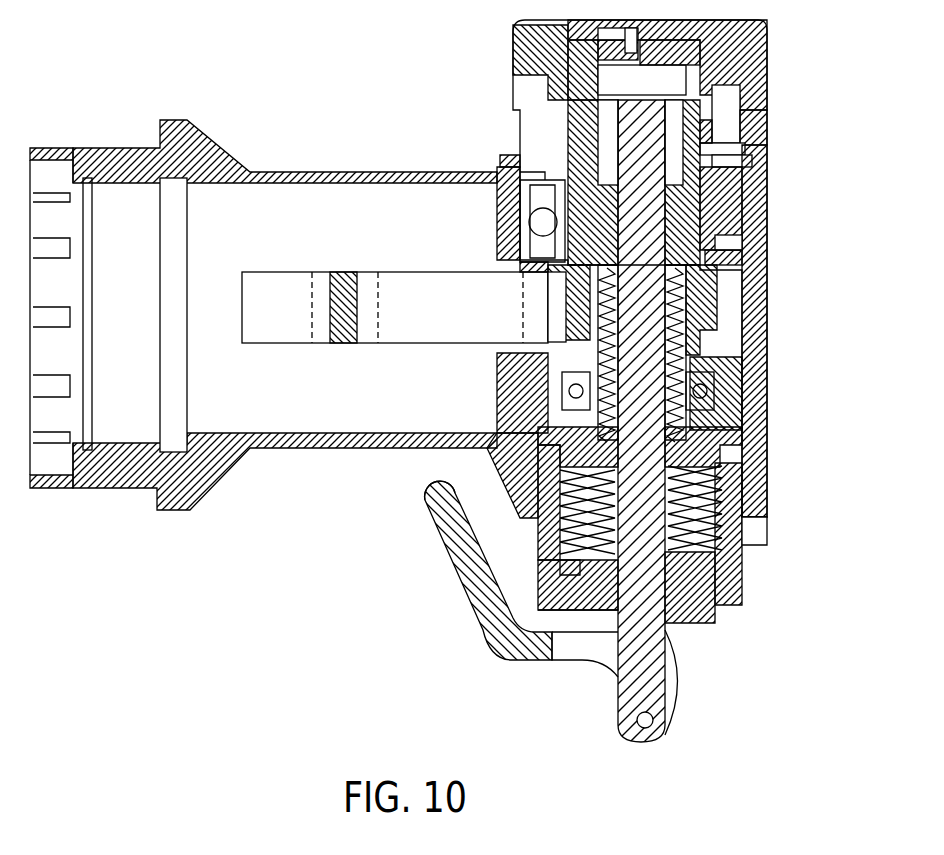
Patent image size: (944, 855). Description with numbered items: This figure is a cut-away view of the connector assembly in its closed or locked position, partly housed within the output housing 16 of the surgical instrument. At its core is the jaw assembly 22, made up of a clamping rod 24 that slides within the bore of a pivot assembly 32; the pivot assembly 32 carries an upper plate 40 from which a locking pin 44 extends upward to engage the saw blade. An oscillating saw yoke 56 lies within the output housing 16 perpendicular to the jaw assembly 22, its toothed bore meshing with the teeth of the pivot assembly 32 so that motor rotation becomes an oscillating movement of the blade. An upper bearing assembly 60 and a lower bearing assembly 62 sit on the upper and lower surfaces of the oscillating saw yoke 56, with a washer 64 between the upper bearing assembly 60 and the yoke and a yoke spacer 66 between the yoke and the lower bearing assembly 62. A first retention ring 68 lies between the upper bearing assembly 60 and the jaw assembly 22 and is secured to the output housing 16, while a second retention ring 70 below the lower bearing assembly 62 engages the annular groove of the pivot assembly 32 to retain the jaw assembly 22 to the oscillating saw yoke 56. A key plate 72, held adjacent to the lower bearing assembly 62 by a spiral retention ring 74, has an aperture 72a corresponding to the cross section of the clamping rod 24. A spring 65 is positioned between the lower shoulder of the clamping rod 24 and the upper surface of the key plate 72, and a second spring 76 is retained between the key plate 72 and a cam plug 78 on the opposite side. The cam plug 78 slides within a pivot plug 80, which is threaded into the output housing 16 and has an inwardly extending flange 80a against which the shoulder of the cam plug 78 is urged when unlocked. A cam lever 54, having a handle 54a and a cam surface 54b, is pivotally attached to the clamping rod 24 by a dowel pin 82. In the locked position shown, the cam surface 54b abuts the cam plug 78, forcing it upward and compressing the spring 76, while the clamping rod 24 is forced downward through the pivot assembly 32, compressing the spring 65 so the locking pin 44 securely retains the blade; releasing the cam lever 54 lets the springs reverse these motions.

The output housing 16 is at (262, 171).
The jaw assembly 22 is at (786, 75).
The clamping rod 24 is at (722, 512).
The pivot assembly 32 is at (716, 178).
The upper plate 40 is at (766, 126).
The locking pin 44 is at (736, 106).
The cam lever 54 is at (486, 630).
The lever or handle 54a is at (437, 530).
The cam surface 54b is at (684, 656).
The oscillating saw yoke 56 is at (404, 271).
The upper bearing assembly 60 is at (746, 200).
The lower bearing assembly 62 is at (706, 400).
The washer 64 is at (742, 245).
The spring 65 is at (497, 383).
The yoke spacer 66 is at (692, 345).
The first retention ring 68 is at (512, 164).
The second retention ring 70 is at (732, 448).
The key plate 72 is at (716, 445).
The aperture 72a is at (536, 515).
The spiral retention ring 74 is at (506, 472).
The spring 76 is at (736, 476).
The cam plug 78 is at (706, 596).
The pivot plug 80 is at (744, 556).
The inwardly extending flange 80a is at (566, 582).
The dowel pin 82 is at (648, 729).